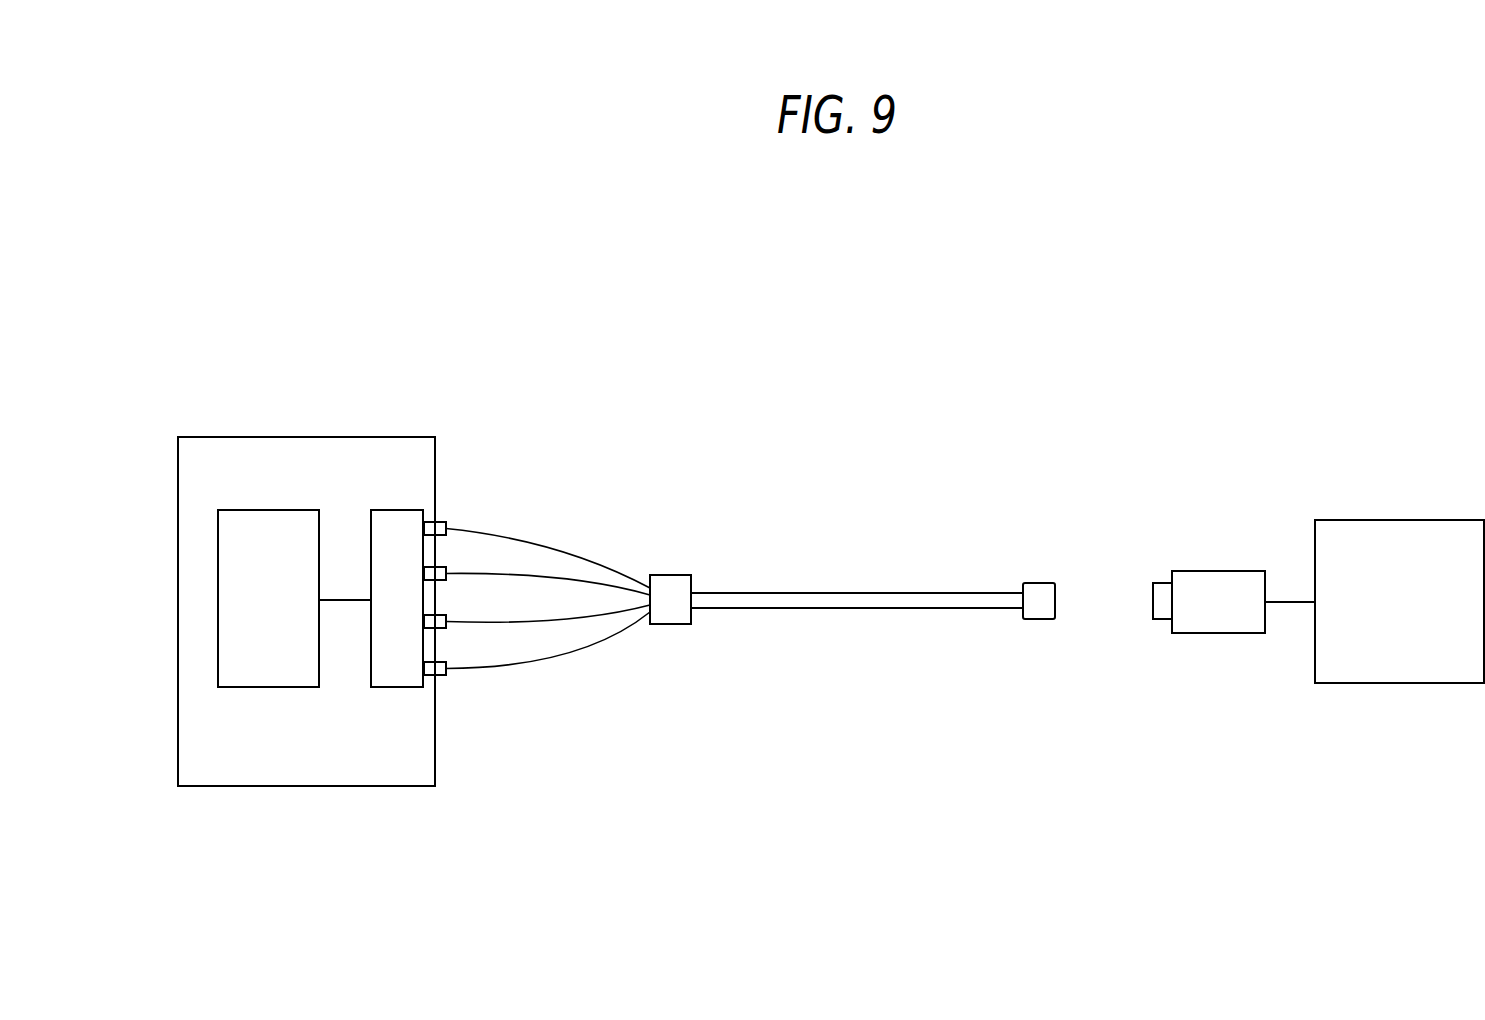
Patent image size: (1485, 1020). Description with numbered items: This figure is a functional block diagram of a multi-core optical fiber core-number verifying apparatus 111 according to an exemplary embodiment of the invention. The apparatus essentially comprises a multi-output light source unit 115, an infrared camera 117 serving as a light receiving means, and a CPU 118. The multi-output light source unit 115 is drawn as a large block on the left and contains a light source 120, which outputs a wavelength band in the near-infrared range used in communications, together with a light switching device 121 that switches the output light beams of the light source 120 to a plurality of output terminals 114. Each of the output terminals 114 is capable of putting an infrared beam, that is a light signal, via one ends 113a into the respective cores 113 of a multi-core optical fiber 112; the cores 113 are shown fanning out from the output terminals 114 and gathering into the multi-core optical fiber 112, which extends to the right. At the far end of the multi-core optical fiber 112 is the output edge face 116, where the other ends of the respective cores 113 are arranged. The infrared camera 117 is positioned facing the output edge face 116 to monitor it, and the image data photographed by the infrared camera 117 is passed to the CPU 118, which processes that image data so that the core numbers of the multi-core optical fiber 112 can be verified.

The multi-core optical fiber core-number verifying apparatus 111 is at (883, 362).
The multi-core optical fiber 112 is at (805, 592).
The cores 113 is at (600, 562).
The one ends of the cores 113a is at (447, 521).
The output terminals 114 is at (440, 518).
The multi-output light source unit 115 is at (297, 437).
The output edge face 116 is at (1037, 583).
The infrared camera 117 is at (1215, 571).
The CPU 118 is at (1400, 520).
The light source 120 is at (242, 510).
The light switching device 121 is at (395, 510).